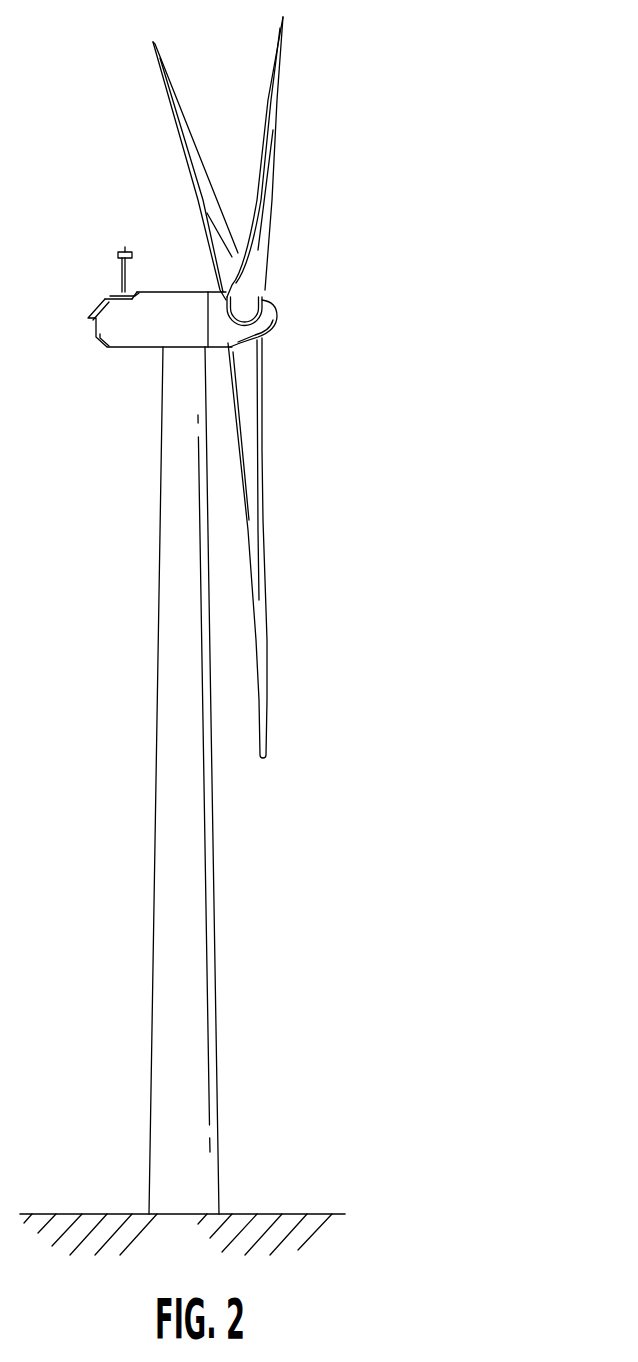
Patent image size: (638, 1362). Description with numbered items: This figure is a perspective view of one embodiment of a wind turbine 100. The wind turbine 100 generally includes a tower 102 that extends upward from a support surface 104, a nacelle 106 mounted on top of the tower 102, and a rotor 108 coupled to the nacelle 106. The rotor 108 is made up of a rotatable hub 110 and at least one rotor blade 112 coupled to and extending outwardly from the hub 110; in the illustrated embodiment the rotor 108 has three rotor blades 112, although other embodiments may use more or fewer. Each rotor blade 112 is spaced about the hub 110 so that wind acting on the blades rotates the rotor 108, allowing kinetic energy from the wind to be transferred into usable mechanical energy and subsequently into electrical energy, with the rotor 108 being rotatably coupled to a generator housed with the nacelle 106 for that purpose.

The wind turbine 100 is at (396, 129).
The tower 102 is at (195, 851).
The support surface 104 is at (93, 1214).
The nacelle 106 is at (134, 349).
The rotor 108 is at (315, 275).
The rotatable hub 110 is at (278, 314).
The rotor blade 112 is at (265, 135).